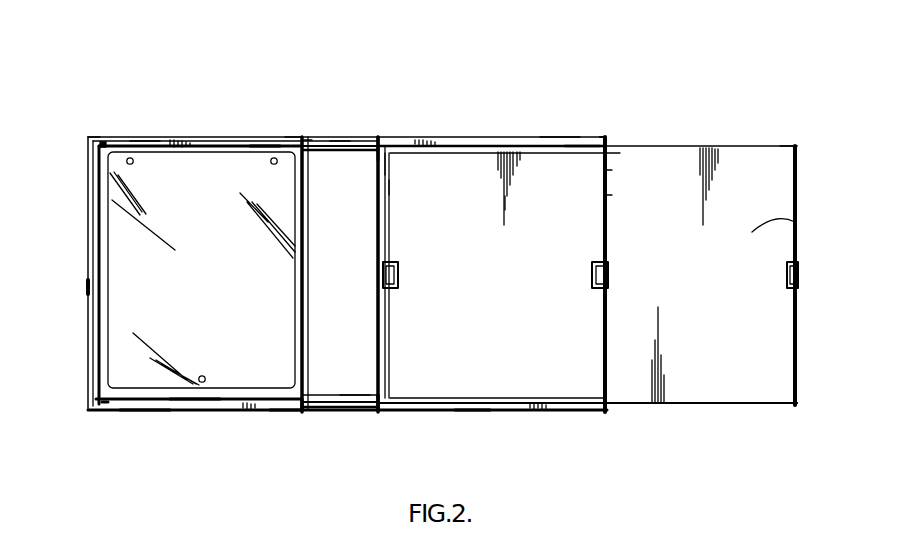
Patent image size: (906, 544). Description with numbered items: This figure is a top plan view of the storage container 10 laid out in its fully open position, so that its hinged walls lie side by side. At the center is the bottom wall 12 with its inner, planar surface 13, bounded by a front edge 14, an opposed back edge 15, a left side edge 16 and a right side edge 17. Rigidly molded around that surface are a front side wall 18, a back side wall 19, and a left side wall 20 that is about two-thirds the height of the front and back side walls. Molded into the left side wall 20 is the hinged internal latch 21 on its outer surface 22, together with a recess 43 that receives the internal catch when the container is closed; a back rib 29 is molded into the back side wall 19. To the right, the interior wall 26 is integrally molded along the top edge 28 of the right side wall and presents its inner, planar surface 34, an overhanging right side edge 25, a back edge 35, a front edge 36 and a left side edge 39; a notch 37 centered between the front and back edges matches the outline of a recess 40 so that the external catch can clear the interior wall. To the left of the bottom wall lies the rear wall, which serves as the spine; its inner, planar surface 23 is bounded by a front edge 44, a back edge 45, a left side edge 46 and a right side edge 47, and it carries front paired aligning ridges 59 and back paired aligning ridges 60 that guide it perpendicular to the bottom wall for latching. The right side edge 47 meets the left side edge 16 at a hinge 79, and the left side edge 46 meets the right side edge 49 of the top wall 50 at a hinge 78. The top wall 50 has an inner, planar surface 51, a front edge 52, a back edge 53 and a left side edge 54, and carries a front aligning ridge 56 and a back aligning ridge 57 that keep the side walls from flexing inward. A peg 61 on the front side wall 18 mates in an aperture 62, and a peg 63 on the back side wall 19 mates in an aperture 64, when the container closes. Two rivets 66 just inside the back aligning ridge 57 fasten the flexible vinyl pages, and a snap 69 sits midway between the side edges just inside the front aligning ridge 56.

The storage container 10 is at (160, 110).
The bottom wall 12 is at (558, 133).
The inner, planar surface 13 is at (496, 281).
The front edge 14 is at (455, 413).
The back edge 15 is at (573, 137).
The left side edge 16 is at (390, 142).
The right side edge 17 is at (615, 406).
The front side wall 18 is at (468, 413).
The back side wall 19 is at (523, 193).
The left side wall 20 is at (393, 187).
The internal latch 21 is at (808, 271).
The outer surface 22 is at (390, 410).
The inner, planar surface 23 is at (361, 281).
The right side edge 25 is at (793, 320).
The interior wall 26 is at (793, 222).
The top edge 28 is at (607, 175).
The back rib 29 is at (607, 152).
The inner, planar surface 34 is at (756, 293).
The back edge 35 is at (790, 147).
The front edge 36 is at (750, 406).
The notch 37 is at (613, 285).
The left side edge 39 is at (607, 200).
The recess 40 is at (596, 290).
The recess 43 is at (395, 290).
The front edge 44 is at (352, 410).
The back edge 45 is at (340, 137).
The left side edge 46 is at (300, 418).
The right side edge 47 is at (368, 137).
The right side edge 49 is at (290, 415).
The top wall 50 is at (90, 137).
The inner, planar surface 51 is at (221, 283).
The front edge 52 is at (145, 416).
The back edge 53 is at (143, 137).
The left side edge 54 is at (93, 300).
The front aligning ridge 56 is at (193, 406).
The back aligning ridge 57 is at (263, 146).
The front paired aligning ridges 59 is at (326, 413).
The back paired aligning ridges 60 is at (283, 136).
The peg 61 is at (605, 410).
The aperture 62 is at (105, 404).
The peg 63 is at (593, 137).
The aperture 64 is at (103, 142).
The rivets 66 is at (270, 158).
The snap 69 is at (202, 383).
The hinge 78 is at (297, 136).
The hinge 79 is at (384, 135).